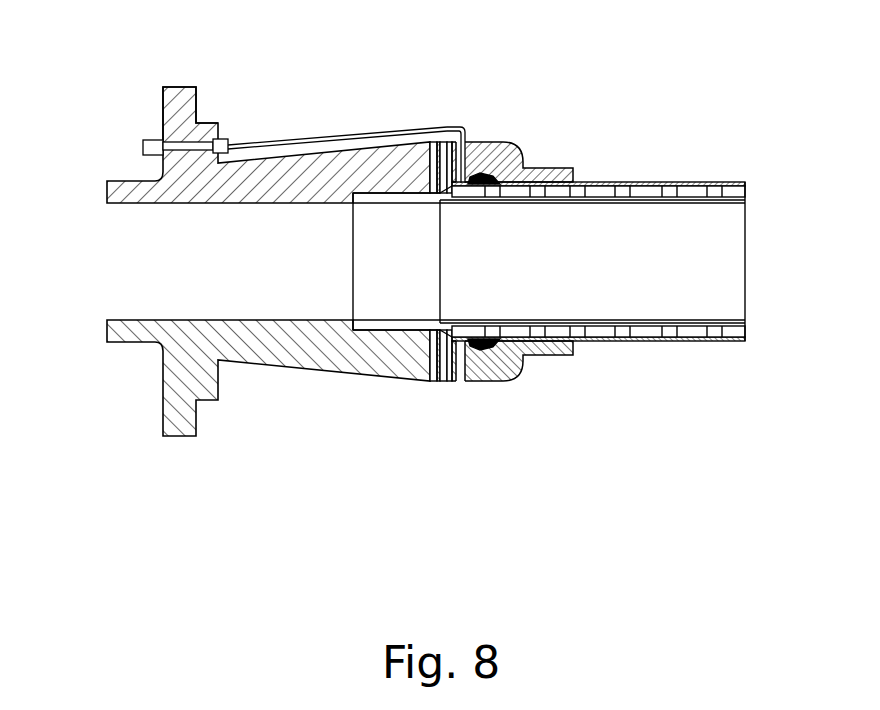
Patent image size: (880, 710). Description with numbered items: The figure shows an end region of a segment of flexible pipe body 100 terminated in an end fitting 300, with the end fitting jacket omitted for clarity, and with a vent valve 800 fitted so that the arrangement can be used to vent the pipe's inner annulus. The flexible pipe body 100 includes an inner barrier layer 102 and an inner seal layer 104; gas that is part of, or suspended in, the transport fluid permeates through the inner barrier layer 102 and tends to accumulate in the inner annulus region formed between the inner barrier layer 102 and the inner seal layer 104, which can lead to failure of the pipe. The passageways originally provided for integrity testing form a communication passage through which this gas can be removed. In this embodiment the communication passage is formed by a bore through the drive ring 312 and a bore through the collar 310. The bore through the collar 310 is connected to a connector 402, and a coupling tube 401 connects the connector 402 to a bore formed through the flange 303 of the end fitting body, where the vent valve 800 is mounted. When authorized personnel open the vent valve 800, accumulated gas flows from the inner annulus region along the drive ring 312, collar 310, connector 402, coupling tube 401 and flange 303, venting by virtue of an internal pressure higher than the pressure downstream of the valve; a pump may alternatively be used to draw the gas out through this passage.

The flexible pipe body 100 is at (578, 302).
The inner barrier layer 102 is at (723, 205).
The inner seal layer 104 is at (737, 182).
The end fitting 300 is at (225, 285).
The flange 303 is at (183, 100).
The collar 310 is at (535, 140).
The drive ring 312 is at (480, 188).
The coupling tube 401 is at (316, 138).
The connector 402 is at (456, 125).
The vent valve 800 is at (150, 140).